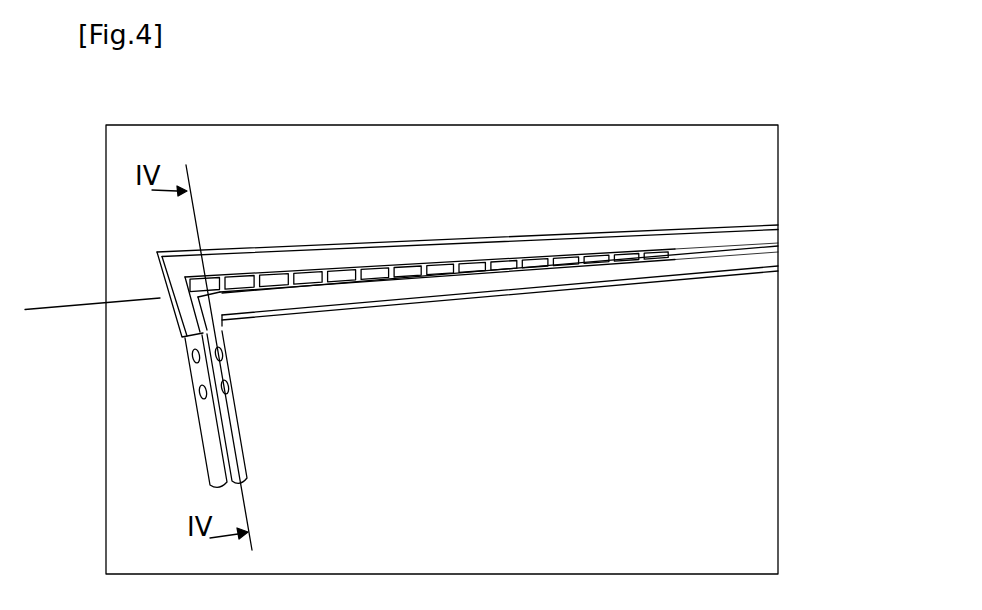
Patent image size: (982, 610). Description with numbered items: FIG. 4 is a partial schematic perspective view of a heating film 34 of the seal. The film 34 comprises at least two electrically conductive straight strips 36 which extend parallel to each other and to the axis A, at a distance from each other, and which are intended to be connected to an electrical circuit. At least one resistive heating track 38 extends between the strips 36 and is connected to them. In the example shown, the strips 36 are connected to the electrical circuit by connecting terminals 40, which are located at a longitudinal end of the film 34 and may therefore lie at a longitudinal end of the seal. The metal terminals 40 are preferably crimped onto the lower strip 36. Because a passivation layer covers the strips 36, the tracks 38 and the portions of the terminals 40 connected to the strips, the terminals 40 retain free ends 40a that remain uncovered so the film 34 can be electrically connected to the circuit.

The heating film 34 is at (783, 188).
The electrically conductive straight strips 36 is at (481, 253).
The resistive heating track 38 is at (280, 280).
The connecting terminals 40 is at (227, 412).
The free ends 40a is at (230, 467).
The axis A is at (778, 246).